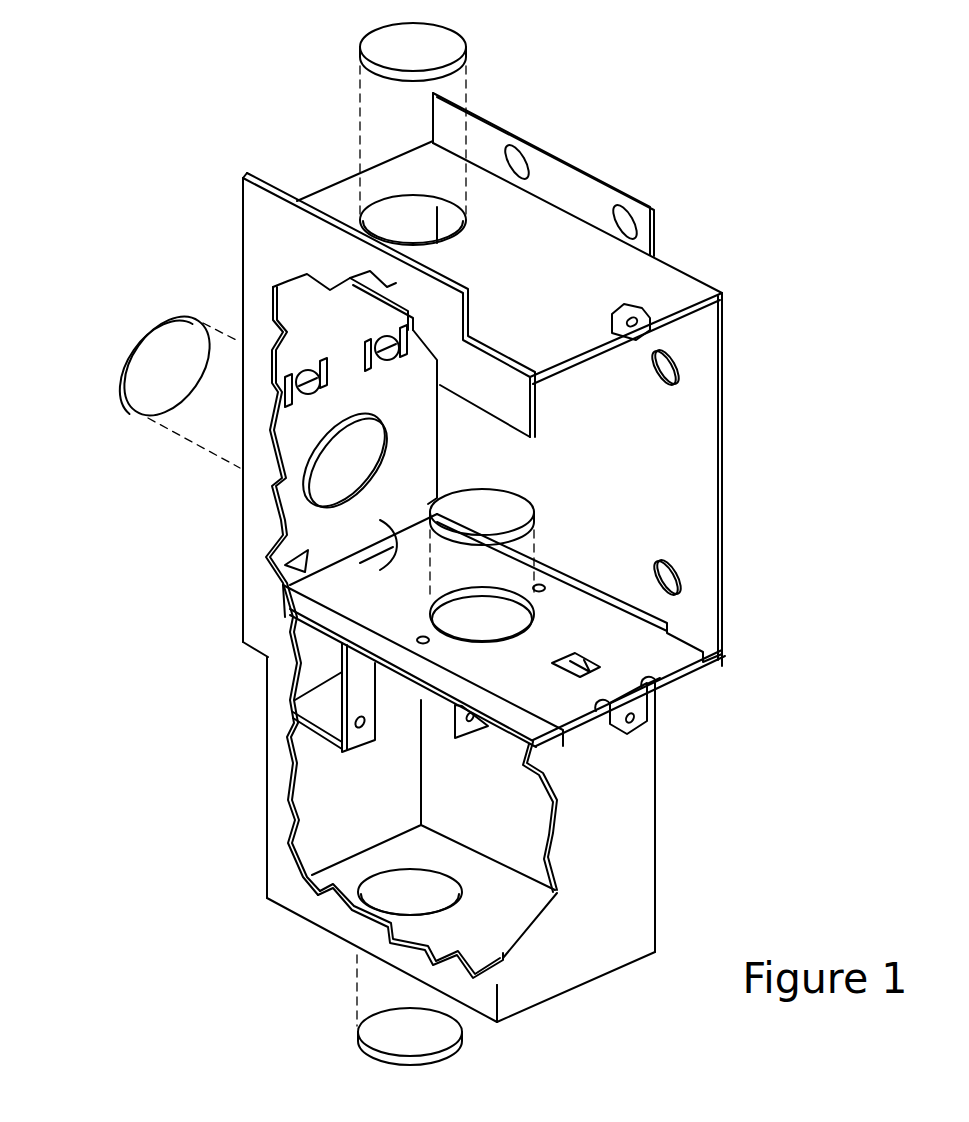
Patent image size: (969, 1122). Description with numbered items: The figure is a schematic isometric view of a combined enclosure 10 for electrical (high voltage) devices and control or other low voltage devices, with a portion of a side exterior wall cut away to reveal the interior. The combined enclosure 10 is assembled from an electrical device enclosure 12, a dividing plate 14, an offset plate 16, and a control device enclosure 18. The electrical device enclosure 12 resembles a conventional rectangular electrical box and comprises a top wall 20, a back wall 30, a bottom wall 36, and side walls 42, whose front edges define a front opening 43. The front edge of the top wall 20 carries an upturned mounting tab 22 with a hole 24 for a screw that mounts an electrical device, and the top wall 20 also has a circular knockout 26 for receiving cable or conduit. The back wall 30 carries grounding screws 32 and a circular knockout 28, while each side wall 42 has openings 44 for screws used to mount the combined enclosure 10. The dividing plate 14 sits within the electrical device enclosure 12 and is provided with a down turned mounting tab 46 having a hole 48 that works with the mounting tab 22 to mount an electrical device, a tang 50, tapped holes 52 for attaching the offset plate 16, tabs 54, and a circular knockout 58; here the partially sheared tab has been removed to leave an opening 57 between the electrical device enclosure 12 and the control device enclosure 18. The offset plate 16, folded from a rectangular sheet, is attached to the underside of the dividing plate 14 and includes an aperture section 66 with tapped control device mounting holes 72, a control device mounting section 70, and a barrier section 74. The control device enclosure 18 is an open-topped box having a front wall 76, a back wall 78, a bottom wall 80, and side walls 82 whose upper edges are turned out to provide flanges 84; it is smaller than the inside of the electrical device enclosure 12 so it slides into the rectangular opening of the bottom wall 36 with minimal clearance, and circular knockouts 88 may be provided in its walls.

The combined enclosure 10 is at (110, 523).
The electrical device enclosure 12 is at (807, 428).
The dividing plate 14 is at (627, 633).
The offset plate 16 is at (358, 668).
The control device enclosure 18 is at (753, 827).
The top wall 20 is at (545, 245).
The mounting tab 22 is at (652, 330).
The hole 24 is at (640, 316).
The circular knockout 26 is at (460, 33).
The circular knockout 28 is at (150, 320).
The back wall 30 is at (300, 432).
The grounding screws 32 is at (303, 365).
The bottom wall 36 is at (590, 660).
The side walls 42 is at (262, 225).
The front opening 43 is at (688, 462).
The openings 44 is at (680, 368).
The mounting tab 46 is at (647, 712).
The hole 48 is at (640, 722).
The tang 50 is at (668, 688).
The tapped holes 52 is at (537, 585).
The tabs 54 is at (285, 555).
The opening 57 is at (270, 607).
The circular knockout 58 is at (505, 492).
The aperture section 66 is at (358, 688).
The control device mounting section 70 is at (473, 713).
The control device mounting holes 72 is at (370, 712).
The barrier section 74 is at (320, 727).
The front wall 76 is at (630, 895).
The back wall 78 is at (322, 820).
The bottom wall 80 is at (495, 917).
The side walls 82 is at (480, 997).
The flanges 84 is at (600, 592).
The circular knockouts 88 is at (357, 1040).